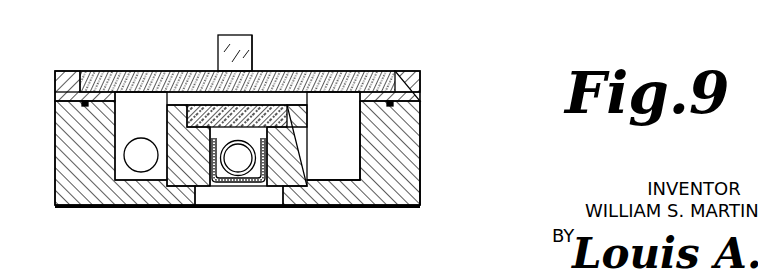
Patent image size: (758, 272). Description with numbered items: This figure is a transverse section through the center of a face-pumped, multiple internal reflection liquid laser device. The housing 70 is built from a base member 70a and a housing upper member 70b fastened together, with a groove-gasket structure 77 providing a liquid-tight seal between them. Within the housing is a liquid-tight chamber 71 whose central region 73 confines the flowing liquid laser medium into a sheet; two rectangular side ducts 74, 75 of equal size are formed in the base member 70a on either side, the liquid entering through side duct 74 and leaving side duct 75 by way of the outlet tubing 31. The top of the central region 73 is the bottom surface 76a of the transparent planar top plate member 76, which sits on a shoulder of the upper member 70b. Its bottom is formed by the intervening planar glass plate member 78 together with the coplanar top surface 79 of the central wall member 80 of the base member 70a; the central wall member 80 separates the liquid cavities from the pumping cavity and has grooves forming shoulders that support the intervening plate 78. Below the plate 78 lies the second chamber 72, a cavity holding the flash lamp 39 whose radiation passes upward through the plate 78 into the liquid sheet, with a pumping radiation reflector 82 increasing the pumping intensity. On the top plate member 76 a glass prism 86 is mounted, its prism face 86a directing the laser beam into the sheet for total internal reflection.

The housing 70 is at (358, 64).
The base member 70a is at (421, 190).
The housing upper member 70b is at (420, 88).
The liquid-tight chamber 71 is at (361, 143).
The second chamber 72 is at (262, 189).
The central region 73 is at (269, 103).
The side duct 74 is at (337, 172).
The side duct 75 is at (124, 128).
The top plate member 76 is at (157, 72).
The bottom surface of top plate member 76a is at (152, 97).
The groove-gasket structure 77 is at (83, 104).
The intervening planar glass plate member 78 is at (208, 97).
The top surface of central wall member 79 is at (299, 106).
The central wall member 80 is at (308, 133).
The pumping radiation reflector 82 is at (213, 184).
The glass prism 86 is at (222, 35).
The prism face 86a is at (255, 50).
The tubing 31 is at (138, 165).
The flash lamp 39 is at (246, 180).